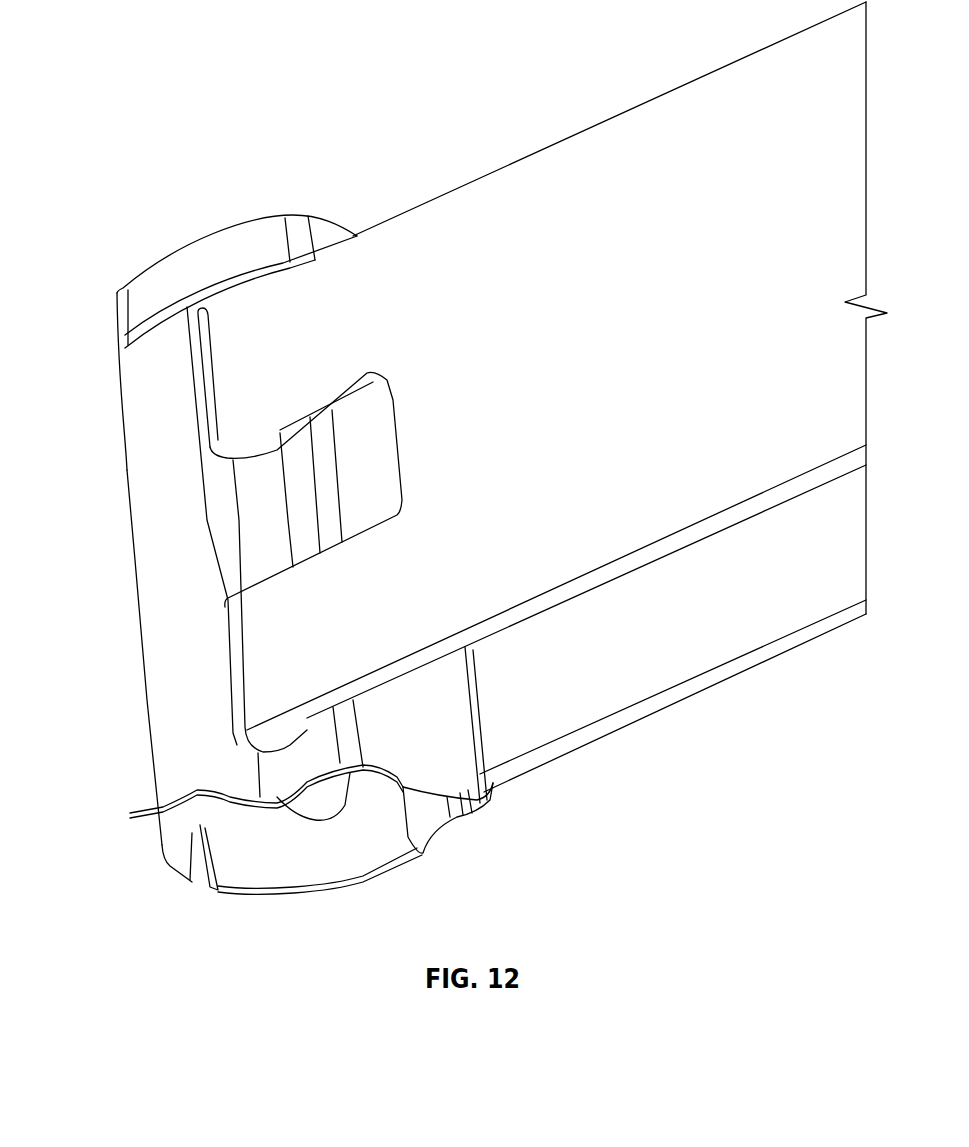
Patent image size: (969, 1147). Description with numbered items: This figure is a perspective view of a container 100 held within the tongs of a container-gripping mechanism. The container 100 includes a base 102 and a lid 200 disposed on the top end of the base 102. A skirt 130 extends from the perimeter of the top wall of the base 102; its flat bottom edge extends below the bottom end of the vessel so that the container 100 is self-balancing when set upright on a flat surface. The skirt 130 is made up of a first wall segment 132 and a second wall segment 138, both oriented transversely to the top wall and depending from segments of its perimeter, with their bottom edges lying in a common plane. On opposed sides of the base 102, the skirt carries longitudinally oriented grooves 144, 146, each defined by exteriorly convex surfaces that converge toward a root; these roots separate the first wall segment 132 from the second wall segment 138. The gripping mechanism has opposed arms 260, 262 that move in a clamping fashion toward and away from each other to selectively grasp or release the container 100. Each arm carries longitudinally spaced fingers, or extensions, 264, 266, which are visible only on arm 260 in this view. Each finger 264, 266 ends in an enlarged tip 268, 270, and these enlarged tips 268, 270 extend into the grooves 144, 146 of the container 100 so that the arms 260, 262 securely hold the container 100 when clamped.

The container 100 is at (122, 203).
The base 102 is at (118, 430).
The skirt 130 is at (133, 620).
The first wall segment 132 is at (175, 708).
The second wall segment 138 is at (447, 723).
The groove 144 is at (287, 775).
The groove 146 is at (430, 828).
The lid 200 is at (175, 249).
The arm 260 is at (530, 152).
The arm 262 is at (728, 678).
The finger 264 is at (338, 310).
The finger 266 is at (390, 675).
The enlarged tip 268 is at (250, 450).
The enlarged tip 270 is at (253, 733).